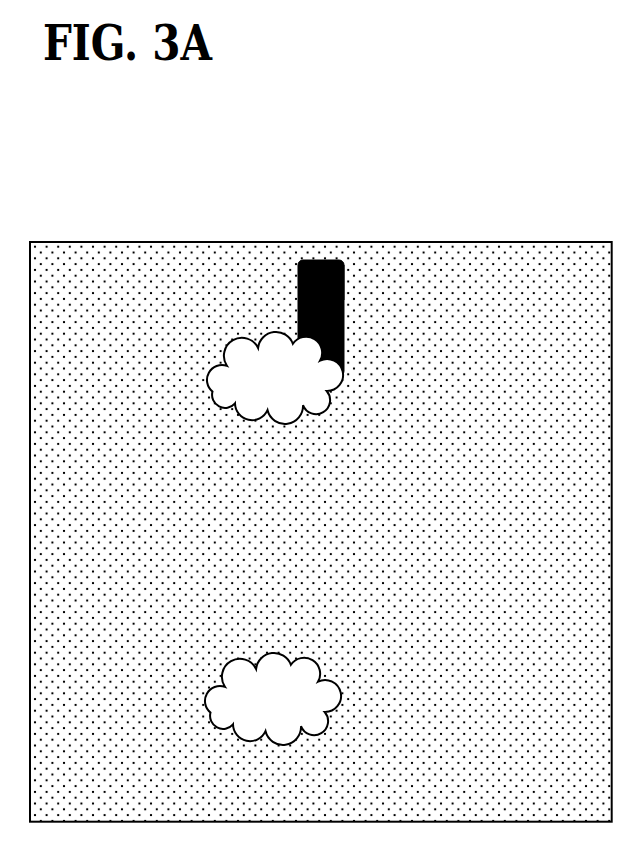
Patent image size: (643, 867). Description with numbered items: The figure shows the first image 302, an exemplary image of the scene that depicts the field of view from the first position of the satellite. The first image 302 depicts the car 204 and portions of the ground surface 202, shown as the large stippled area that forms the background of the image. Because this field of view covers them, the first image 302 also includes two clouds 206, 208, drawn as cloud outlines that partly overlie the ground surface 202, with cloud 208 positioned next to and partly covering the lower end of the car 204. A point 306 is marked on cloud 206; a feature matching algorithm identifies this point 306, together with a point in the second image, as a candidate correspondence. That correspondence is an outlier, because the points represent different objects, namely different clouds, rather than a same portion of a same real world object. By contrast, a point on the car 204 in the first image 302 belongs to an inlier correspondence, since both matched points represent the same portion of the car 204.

The ground surface 202 is at (478, 261).
The car 204 is at (336, 259).
The cloud 208 is at (292, 393).
The cloud 206 is at (292, 715).
The first image 302 is at (344, 263).
The point 306 is at (317, 692).